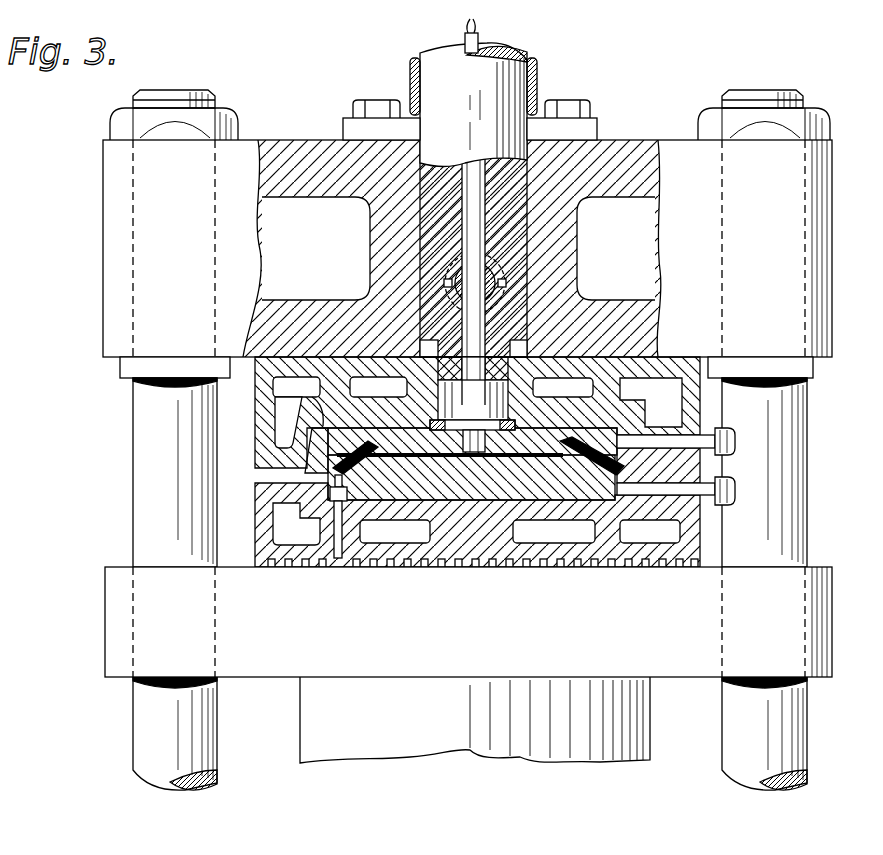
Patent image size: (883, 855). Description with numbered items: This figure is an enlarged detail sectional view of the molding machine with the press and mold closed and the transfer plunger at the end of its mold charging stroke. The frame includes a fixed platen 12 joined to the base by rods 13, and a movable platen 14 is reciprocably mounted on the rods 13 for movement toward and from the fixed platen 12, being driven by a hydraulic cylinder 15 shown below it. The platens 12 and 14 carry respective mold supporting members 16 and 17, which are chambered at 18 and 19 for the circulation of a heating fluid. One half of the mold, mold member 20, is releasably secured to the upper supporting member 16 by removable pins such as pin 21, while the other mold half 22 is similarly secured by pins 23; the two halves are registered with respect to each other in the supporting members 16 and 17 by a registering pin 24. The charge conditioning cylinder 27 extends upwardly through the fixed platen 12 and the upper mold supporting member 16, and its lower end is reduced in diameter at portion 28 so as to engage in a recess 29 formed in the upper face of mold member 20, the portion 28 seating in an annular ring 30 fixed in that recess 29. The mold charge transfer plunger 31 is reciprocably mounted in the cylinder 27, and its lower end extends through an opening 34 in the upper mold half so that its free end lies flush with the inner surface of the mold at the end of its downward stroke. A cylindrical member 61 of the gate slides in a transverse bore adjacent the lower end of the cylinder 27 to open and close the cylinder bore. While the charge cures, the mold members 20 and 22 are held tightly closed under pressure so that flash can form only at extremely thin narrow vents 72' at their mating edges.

The fixed platen 12 is at (832, 252).
The rods 13 is at (807, 536).
The movable platen 14 is at (832, 618).
The hydraulic cylinder 15 is at (650, 698).
The mold supporting member 16 is at (700, 403).
The mold supporting member 17 is at (700, 527).
The chamber 18 is at (278, 388).
The chamber 19 is at (285, 520).
The mold member 20 is at (310, 455).
The removable pin 21 is at (736, 441).
The mold half 22 is at (325, 488).
The pins 23 is at (757, 478).
The pin 24 is at (345, 550).
The charge conditioning cylinder 27 is at (522, 48).
The reduced portion 28 is at (438, 405).
The recess 29 is at (514, 430).
The annular ring 30 is at (513, 428).
The mold charge transfer plunger 31 is at (464, 40).
The opening 34 is at (470, 452).
The cylindrical member 61 is at (500, 284).
The vents 72' is at (306, 401).